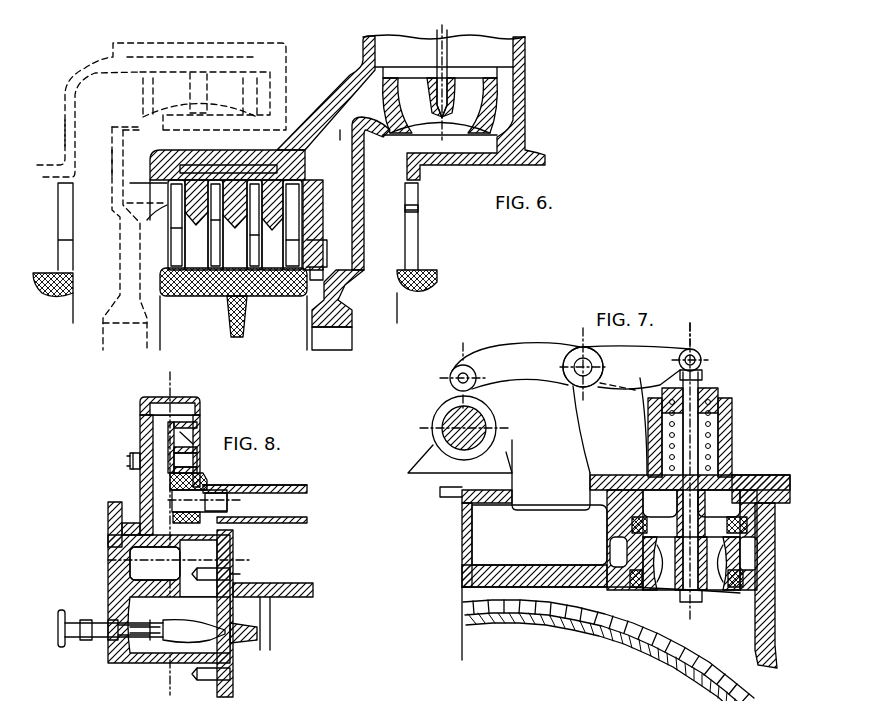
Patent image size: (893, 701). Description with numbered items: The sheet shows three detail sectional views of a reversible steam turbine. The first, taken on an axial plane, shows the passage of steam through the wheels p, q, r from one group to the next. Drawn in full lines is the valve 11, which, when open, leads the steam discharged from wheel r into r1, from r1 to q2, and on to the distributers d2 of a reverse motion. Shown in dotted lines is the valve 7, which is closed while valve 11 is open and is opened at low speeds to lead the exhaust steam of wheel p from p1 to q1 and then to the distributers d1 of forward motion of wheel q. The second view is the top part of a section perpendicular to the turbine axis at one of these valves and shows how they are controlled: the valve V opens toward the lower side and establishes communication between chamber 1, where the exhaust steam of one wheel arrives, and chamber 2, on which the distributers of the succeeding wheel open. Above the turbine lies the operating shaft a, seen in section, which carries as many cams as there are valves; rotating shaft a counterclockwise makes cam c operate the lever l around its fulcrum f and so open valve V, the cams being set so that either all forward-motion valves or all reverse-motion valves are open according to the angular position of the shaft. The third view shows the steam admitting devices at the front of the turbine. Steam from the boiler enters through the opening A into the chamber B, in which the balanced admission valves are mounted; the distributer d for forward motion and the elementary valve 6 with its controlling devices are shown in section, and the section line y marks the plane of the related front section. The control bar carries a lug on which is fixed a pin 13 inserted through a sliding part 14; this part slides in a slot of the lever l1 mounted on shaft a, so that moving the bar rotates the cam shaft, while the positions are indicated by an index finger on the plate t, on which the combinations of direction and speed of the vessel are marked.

In FIG. 6, the valve 7 is at (205, 70).
In FIG. 6, the wheel p is at (53, 253).
In FIG. 6, the exhaust passage of wheel p p1 is at (83, 135).
In FIG. 6, the wheel q is at (233, 309).
In FIG. 6, the passage to forward distributers q1 is at (128, 164).
In FIG. 6, the passage to reverse distributers q2 is at (341, 125).
In FIG. 6, the distributers of forward motion d1 is at (163, 224).
In FIG. 6, the distributers of reverse motion d2 is at (333, 248).
In FIG. 6, the wheel r is at (417, 253).
In FIG. 6, the discharge passage of wheel r r1 is at (402, 212).
In FIG. 6, the valve 11 is at (455, 82).
In FIG. 8, the valve 11 is at (172, 501).
In FIG. 7, the lever l is at (504, 356).
In FIG. 7, the fulcrum f is at (583, 357).
In FIG. 7, the operating shaft a is at (487, 428).
In FIG. 8, the operating shaft a is at (289, 484).
In FIG. 7, the cam c is at (500, 390).
In FIG. 7, the chamber 1 is at (685, 540).
In FIG. 7, the chamber 2 is at (601, 601).
In FIG. 7, the valve V is at (713, 567).
In FIG. 8, the section line Y Y y is at (170, 533).
In FIG. 8, the sliding part 14 is at (197, 436).
In FIG. 8, the pin 13 is at (190, 460).
In FIG. 8, the lever l1 is at (207, 487).
In FIG. 8, the plate t is at (140, 472).
In FIG. 8, the opening A is at (173, 599).
In FIG. 8, the chamber B is at (155, 564).
In FIG. 8, the elementary valve 6 is at (102, 640).
In FIG. 8, the distributer d is at (250, 640).